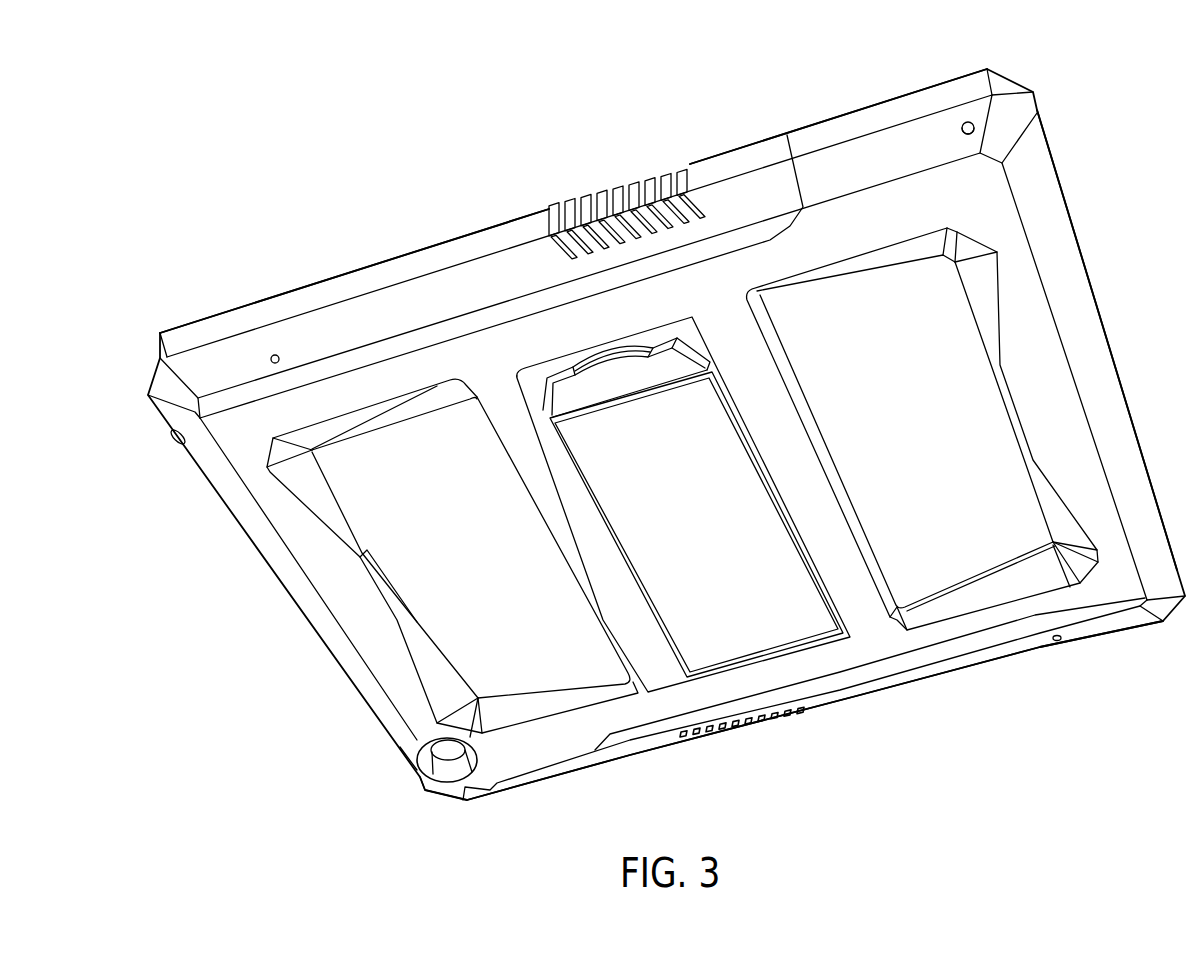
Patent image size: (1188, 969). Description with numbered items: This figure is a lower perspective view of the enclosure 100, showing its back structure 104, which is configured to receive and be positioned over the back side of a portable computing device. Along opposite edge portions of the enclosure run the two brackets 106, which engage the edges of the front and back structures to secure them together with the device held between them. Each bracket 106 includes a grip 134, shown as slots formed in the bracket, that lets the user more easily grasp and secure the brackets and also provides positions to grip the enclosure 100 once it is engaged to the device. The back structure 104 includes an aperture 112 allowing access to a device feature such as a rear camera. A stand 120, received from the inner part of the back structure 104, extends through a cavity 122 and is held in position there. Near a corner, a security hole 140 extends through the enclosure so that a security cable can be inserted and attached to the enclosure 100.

The enclosure 100 is at (488, 118).
The back structure 104 is at (1095, 356).
The bracket 106 is at (478, 228).
The aperture 112 is at (453, 775).
The stand 120 is at (800, 625).
The cavity 122 is at (677, 635).
The grip 134 is at (626, 186).
The security hole 140 is at (968, 122).